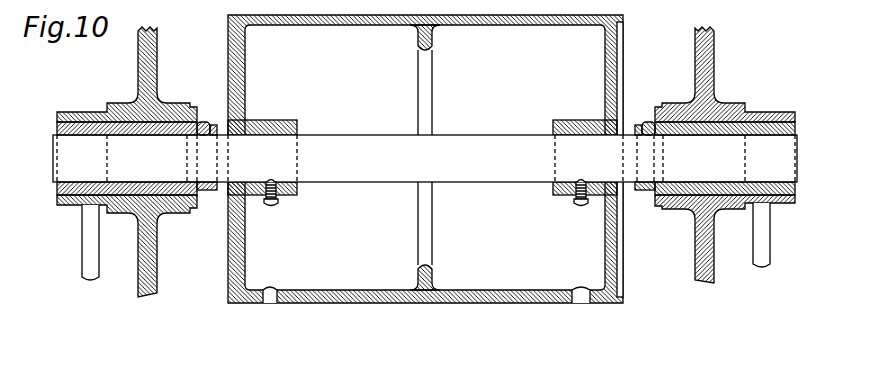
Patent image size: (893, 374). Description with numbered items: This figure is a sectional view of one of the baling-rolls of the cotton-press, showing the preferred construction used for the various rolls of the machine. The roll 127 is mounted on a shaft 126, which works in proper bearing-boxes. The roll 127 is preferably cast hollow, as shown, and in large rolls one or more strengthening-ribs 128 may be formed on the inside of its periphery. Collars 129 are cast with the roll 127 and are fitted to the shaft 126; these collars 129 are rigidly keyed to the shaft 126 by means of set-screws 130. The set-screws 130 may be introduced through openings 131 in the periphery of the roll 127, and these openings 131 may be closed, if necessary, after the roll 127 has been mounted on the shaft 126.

The shaft 126 is at (425, 158).
The roll 127 is at (425, 172).
The strengthening-rib 128 is at (433, 40).
The collars 129 is at (274, 120).
The set-screws 130 is at (278, 201).
The openings 131 is at (269, 304).